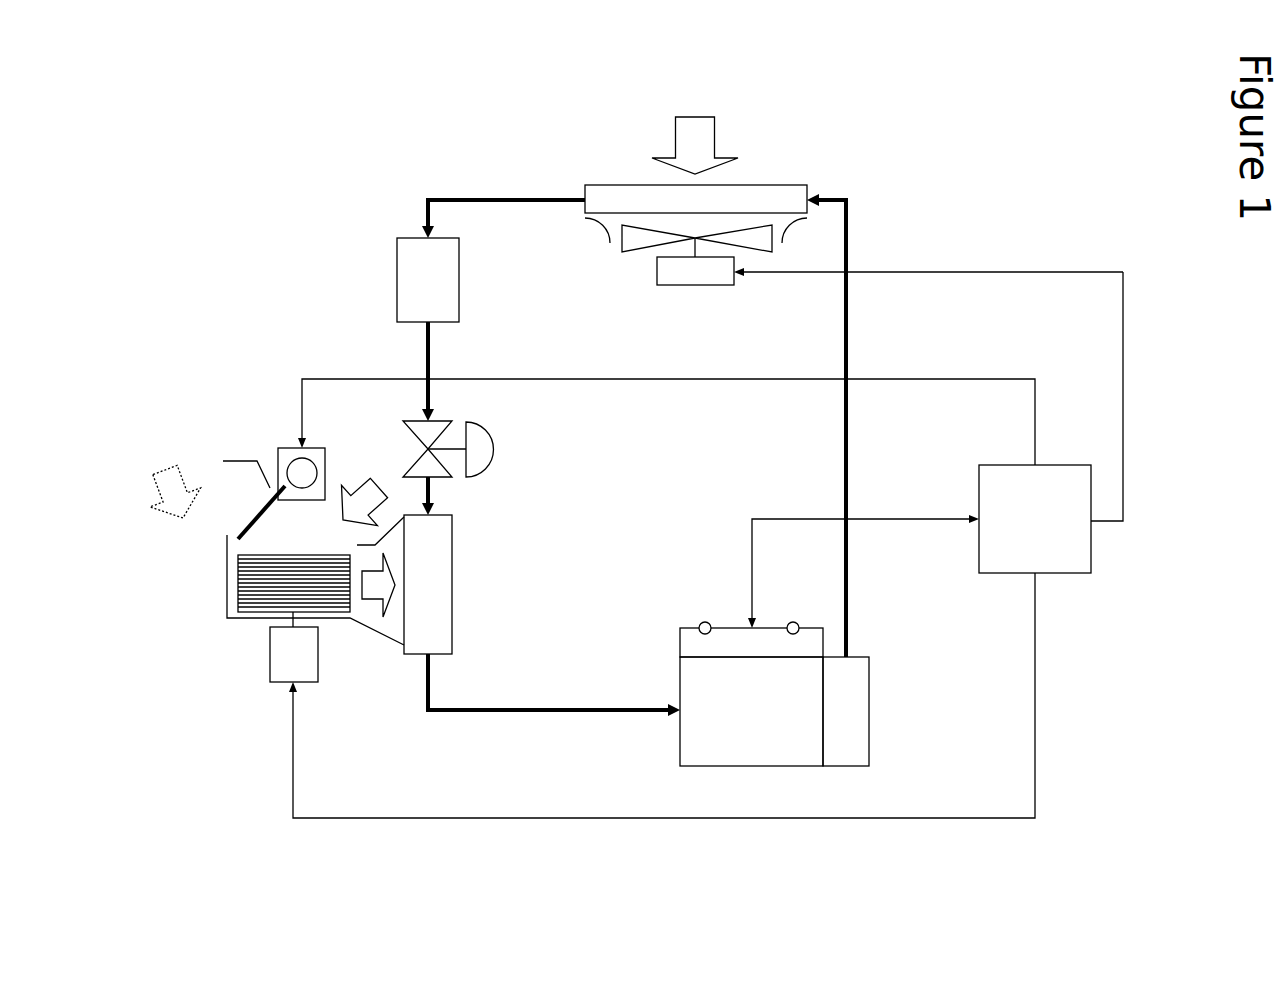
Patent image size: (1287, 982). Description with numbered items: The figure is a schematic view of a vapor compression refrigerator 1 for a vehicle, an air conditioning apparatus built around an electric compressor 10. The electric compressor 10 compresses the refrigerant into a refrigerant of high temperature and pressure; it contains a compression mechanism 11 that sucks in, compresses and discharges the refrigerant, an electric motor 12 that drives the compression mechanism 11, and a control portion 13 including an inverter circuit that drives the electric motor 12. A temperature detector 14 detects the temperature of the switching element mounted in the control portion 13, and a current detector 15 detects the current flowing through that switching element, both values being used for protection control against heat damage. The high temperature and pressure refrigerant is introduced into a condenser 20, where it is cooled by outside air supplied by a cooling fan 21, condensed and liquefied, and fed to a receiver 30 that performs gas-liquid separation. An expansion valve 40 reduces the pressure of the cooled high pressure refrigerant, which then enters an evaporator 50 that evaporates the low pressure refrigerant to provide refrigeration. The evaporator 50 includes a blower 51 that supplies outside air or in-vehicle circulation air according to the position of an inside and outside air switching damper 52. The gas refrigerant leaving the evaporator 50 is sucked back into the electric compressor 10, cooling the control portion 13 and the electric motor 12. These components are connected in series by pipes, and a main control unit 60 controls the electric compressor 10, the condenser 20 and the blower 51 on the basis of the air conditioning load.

The vapor compression refrigerator 1 is at (943, 150).
The electric compressor 10 is at (779, 668).
The compression mechanism 11 is at (869, 682).
The electric motor 12 is at (680, 728).
The control portion 13 is at (680, 638).
The temperature detector 14 is at (705, 622).
The current detector 15 is at (793, 622).
The condenser 20 is at (743, 185).
The cooling fan 21 is at (657, 270).
The receiver 30 is at (397, 260).
The expansion valve 40 is at (485, 458).
The evaporator 50 is at (452, 578).
The blower 51 is at (238, 582).
The inside and outside air switching damper 52 is at (265, 517).
The main control unit 60 is at (1052, 573).